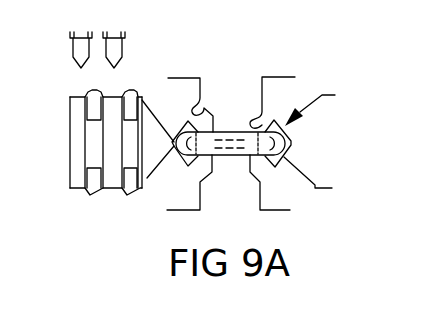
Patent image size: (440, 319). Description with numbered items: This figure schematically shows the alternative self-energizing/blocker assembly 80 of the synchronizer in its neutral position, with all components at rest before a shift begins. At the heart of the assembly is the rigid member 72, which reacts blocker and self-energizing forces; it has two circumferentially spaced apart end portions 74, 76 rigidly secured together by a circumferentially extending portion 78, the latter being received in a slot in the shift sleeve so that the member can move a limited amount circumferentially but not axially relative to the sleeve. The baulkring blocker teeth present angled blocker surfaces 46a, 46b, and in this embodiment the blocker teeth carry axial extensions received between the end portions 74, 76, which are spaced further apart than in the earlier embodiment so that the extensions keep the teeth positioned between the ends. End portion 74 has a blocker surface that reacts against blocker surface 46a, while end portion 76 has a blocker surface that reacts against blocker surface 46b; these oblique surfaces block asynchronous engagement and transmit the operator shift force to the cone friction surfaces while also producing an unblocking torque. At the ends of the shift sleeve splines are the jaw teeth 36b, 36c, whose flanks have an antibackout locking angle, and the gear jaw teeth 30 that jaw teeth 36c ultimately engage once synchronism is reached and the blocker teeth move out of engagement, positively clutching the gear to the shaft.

The gear jaw teeth 30 is at (118, 50).
The jaw teeth 36b is at (87, 193).
The jaw teeth 36c is at (130, 100).
The blocker surface 46a is at (235, 103).
The blocker surface 46b is at (260, 116).
The rigid member 72 is at (234, 108).
The end portion 74 is at (165, 176).
The end portion 76 is at (335, 95).
The circumferentially extending portion 78 is at (250, 172).
The self-energizing/blocker assembly 80 is at (300, 196).